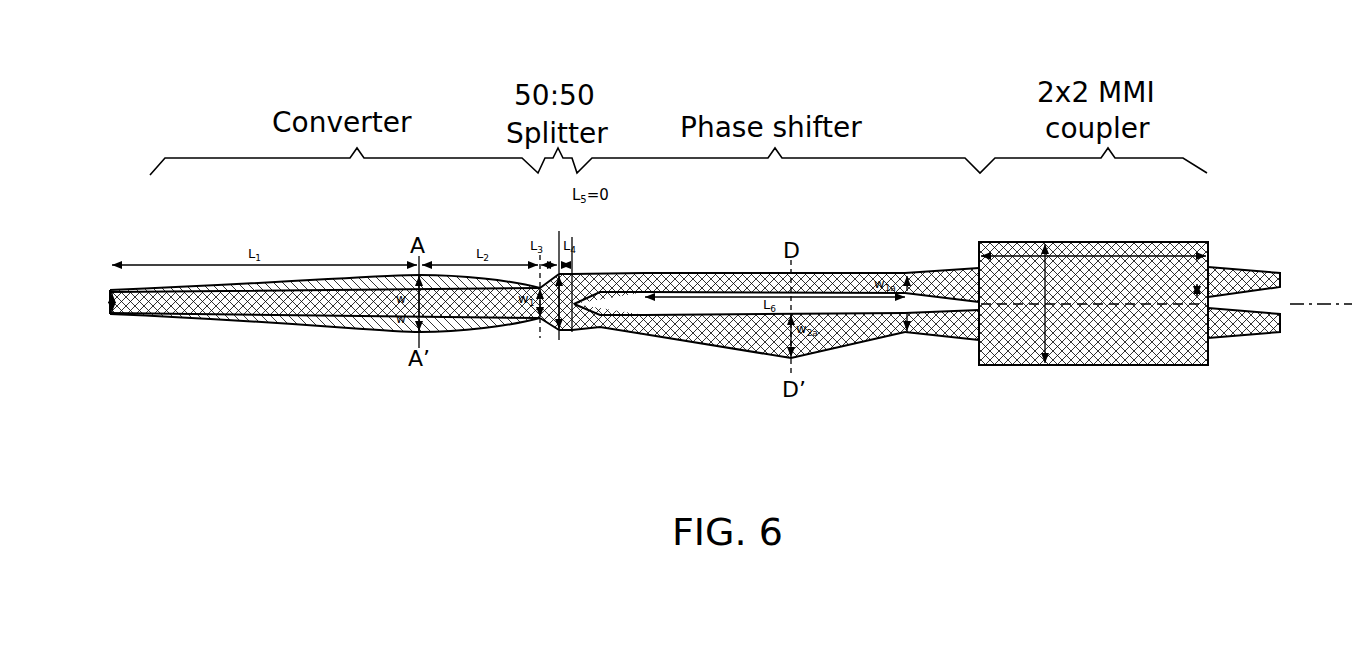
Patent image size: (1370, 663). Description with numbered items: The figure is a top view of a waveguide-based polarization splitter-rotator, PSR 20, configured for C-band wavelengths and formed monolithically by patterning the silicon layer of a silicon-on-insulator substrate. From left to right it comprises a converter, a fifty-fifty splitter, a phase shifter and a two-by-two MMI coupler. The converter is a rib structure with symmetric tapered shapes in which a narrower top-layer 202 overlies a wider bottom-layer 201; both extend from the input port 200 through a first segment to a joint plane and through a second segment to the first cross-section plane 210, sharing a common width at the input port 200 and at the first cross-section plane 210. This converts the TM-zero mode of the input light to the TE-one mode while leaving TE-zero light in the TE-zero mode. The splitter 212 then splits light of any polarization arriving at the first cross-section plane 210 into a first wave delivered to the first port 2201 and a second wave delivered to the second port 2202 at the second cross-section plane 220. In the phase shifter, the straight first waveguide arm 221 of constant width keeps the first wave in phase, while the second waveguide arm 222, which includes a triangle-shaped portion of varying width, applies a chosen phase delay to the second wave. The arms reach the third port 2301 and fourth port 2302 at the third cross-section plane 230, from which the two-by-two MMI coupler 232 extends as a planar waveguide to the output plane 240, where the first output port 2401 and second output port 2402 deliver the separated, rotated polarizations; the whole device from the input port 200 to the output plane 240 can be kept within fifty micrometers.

The PSR 20 is at (734, 43).
The input port 200 is at (114, 302).
The bottom-layer 201 is at (267, 322).
The top-layer 202 is at (350, 311).
The first cross-section plane 210 is at (527, 320).
The splitter 212 is at (548, 330).
The second cross-section plane 220 is at (574, 331).
The first port 2201 is at (586, 283).
The second port 2202 is at (588, 329).
The first waveguide arm 221 is at (752, 273).
The second waveguide arm 222 is at (743, 337).
The third port 2301 is at (973, 277).
The fourth port 2302 is at (973, 314).
The third cross-section plane 230 is at (987, 343).
The 2×2 MMI coupler 232 is at (1090, 356).
The output plane 240 is at (1213, 355).
The first output port 2401 is at (1210, 268).
The second output port 2402 is at (1212, 322).